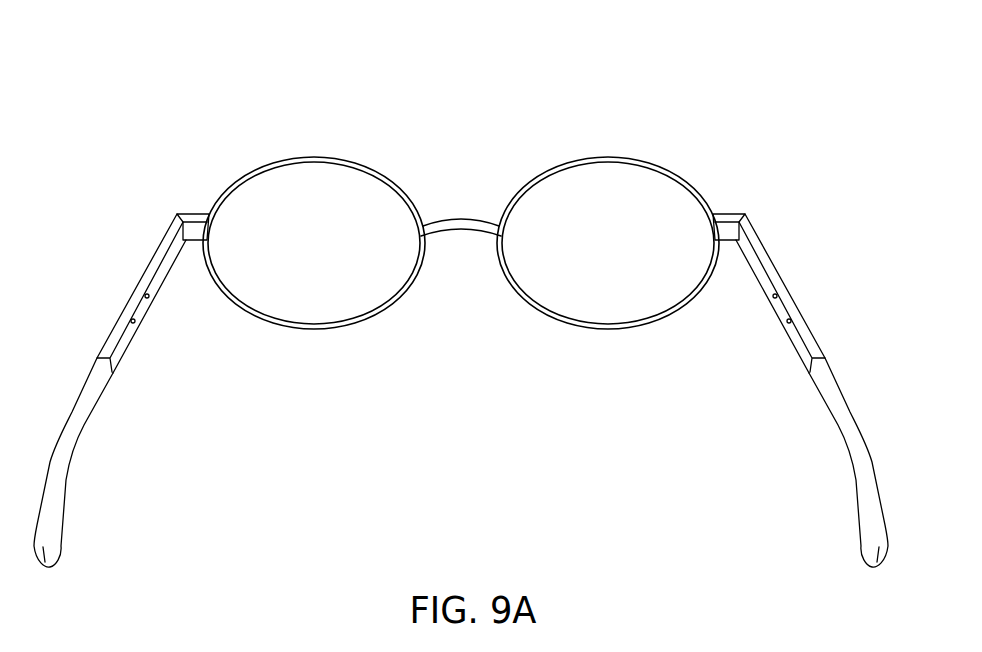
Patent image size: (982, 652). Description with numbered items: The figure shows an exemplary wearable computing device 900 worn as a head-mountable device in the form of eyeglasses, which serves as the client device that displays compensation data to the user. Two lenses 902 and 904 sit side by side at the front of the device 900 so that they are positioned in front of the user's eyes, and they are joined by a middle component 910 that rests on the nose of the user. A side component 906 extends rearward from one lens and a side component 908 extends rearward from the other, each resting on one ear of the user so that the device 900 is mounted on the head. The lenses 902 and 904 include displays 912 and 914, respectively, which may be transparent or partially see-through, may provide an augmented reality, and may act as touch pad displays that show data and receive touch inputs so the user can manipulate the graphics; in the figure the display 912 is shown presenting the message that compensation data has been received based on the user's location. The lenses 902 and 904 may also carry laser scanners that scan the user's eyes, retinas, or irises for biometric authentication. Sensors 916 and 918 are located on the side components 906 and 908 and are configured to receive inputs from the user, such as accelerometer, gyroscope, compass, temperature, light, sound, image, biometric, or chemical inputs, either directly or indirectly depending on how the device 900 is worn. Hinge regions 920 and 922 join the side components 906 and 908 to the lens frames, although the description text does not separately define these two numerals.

The wearable computing device 900 is at (657, 68).
The lens 902 is at (315, 158).
The lens 904 is at (587, 158).
The side component 906 is at (110, 390).
The side component 908 is at (812, 390).
The middle component 910 is at (461, 218).
The display 912 is at (340, 340).
The display 914 is at (625, 340).
The sensor 916 is at (148, 300).
The sensor 918 is at (775, 290).
The left hinge 920 is at (197, 198).
The right hinge 922 is at (742, 197).